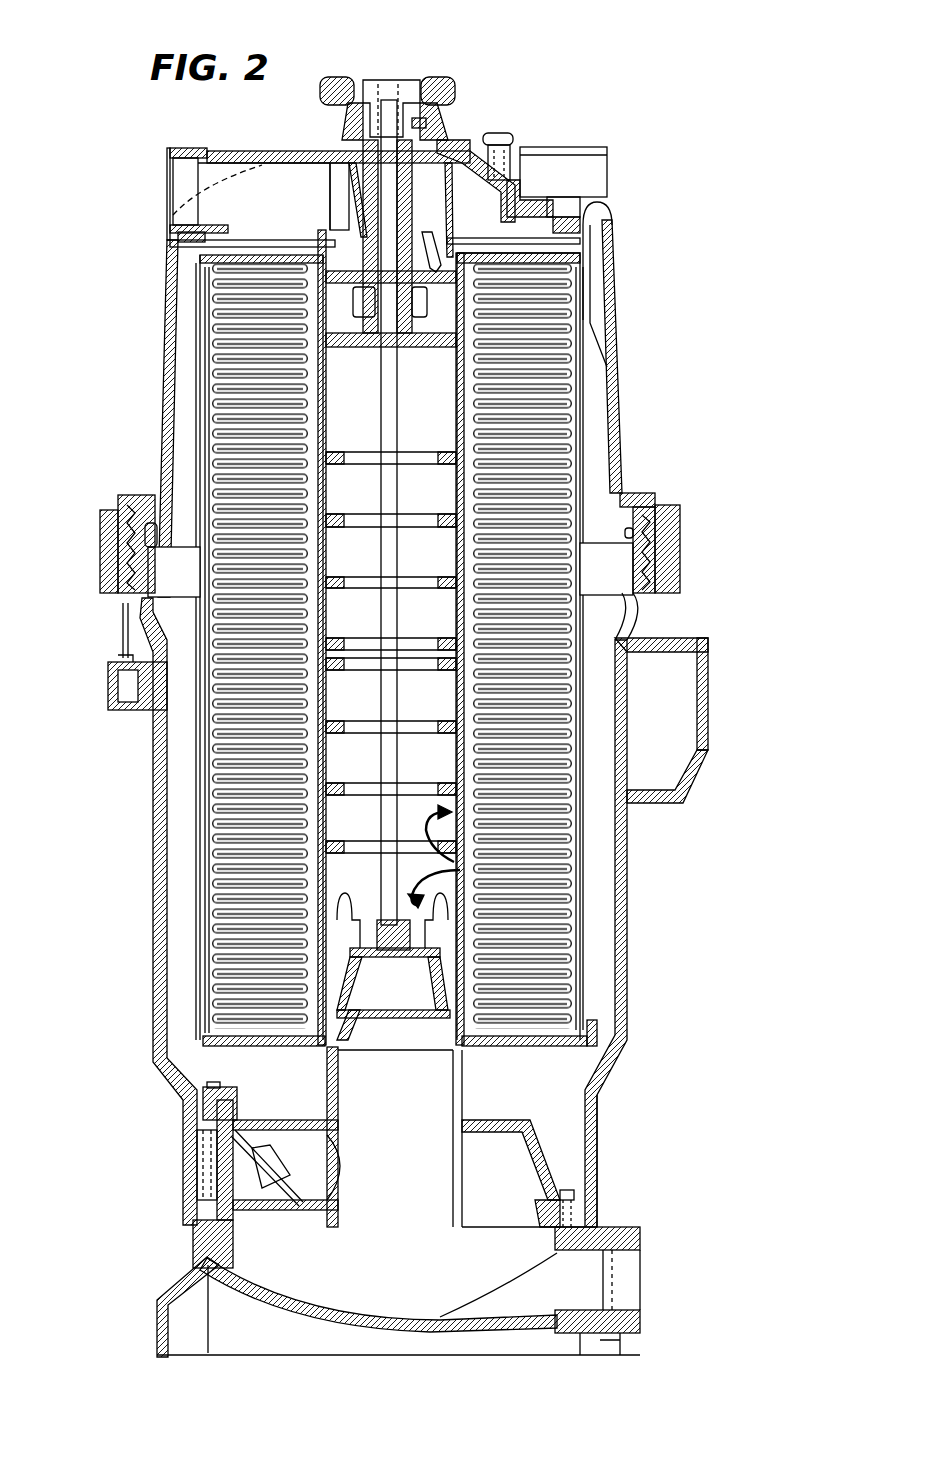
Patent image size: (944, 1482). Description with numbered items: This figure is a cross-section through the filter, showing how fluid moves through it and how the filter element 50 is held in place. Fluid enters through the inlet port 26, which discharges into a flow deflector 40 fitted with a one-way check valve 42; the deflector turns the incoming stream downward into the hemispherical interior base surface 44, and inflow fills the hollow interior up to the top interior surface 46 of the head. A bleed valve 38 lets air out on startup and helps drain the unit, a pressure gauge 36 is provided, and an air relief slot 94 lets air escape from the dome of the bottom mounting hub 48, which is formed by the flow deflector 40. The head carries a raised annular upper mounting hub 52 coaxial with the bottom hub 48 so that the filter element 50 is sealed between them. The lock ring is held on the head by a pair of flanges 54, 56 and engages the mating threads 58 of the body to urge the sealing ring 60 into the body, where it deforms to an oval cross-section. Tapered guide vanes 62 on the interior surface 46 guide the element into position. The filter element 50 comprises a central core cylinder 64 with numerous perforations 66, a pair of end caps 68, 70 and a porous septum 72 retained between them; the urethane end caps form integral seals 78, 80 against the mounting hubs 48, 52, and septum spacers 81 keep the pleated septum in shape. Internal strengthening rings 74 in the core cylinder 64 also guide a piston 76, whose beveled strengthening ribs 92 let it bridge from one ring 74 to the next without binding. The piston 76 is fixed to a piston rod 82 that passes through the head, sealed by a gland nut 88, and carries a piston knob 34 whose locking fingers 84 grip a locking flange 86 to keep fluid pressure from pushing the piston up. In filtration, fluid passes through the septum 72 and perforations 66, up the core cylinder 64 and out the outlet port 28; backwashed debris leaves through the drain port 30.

The inlet port 26 is at (190, 1184).
The outlet port 28 is at (186, 186).
The drain port 30 is at (620, 1280).
The piston knob 34 is at (437, 72).
The pressure gauge 36 is at (600, 160).
The bleed valve 38 is at (500, 132).
The flow deflector 40 is at (535, 1145).
The one-way check valve 42 is at (262, 1168).
The hemispherical interior base surface 44 is at (375, 1324).
The top interior surface 46 is at (512, 196).
The bottom mounting hub 48 is at (430, 1054).
The filter element 50 is at (190, 802).
The upper mounting hub 52 is at (320, 244).
The upper annular flange 54 is at (648, 495).
The flange 56 is at (660, 517).
The mating threads 58 is at (652, 582).
The sealing ring 60 is at (655, 550).
The guide vanes 62 is at (593, 305).
The central core cylinder 64 is at (454, 862).
The perforations 66 is at (500, 728).
The end cap 68 is at (310, 267).
The end cap 70 is at (225, 1042).
The porous septum 72 is at (596, 1028).
The strengthening rings 74 is at (348, 782).
The piston 76 is at (460, 870).
The integral seal 78 is at (300, 305).
The integral seal 80 is at (323, 1040).
The septum spacers 81 is at (570, 400).
The piston rod 82 is at (382, 150).
The locking fingers 84 is at (424, 124).
The locking flange 86 is at (384, 100).
The gland nut 88 is at (370, 240).
The strengthening ribs 92 is at (345, 934).
The air relief slot 94 is at (462, 1084).